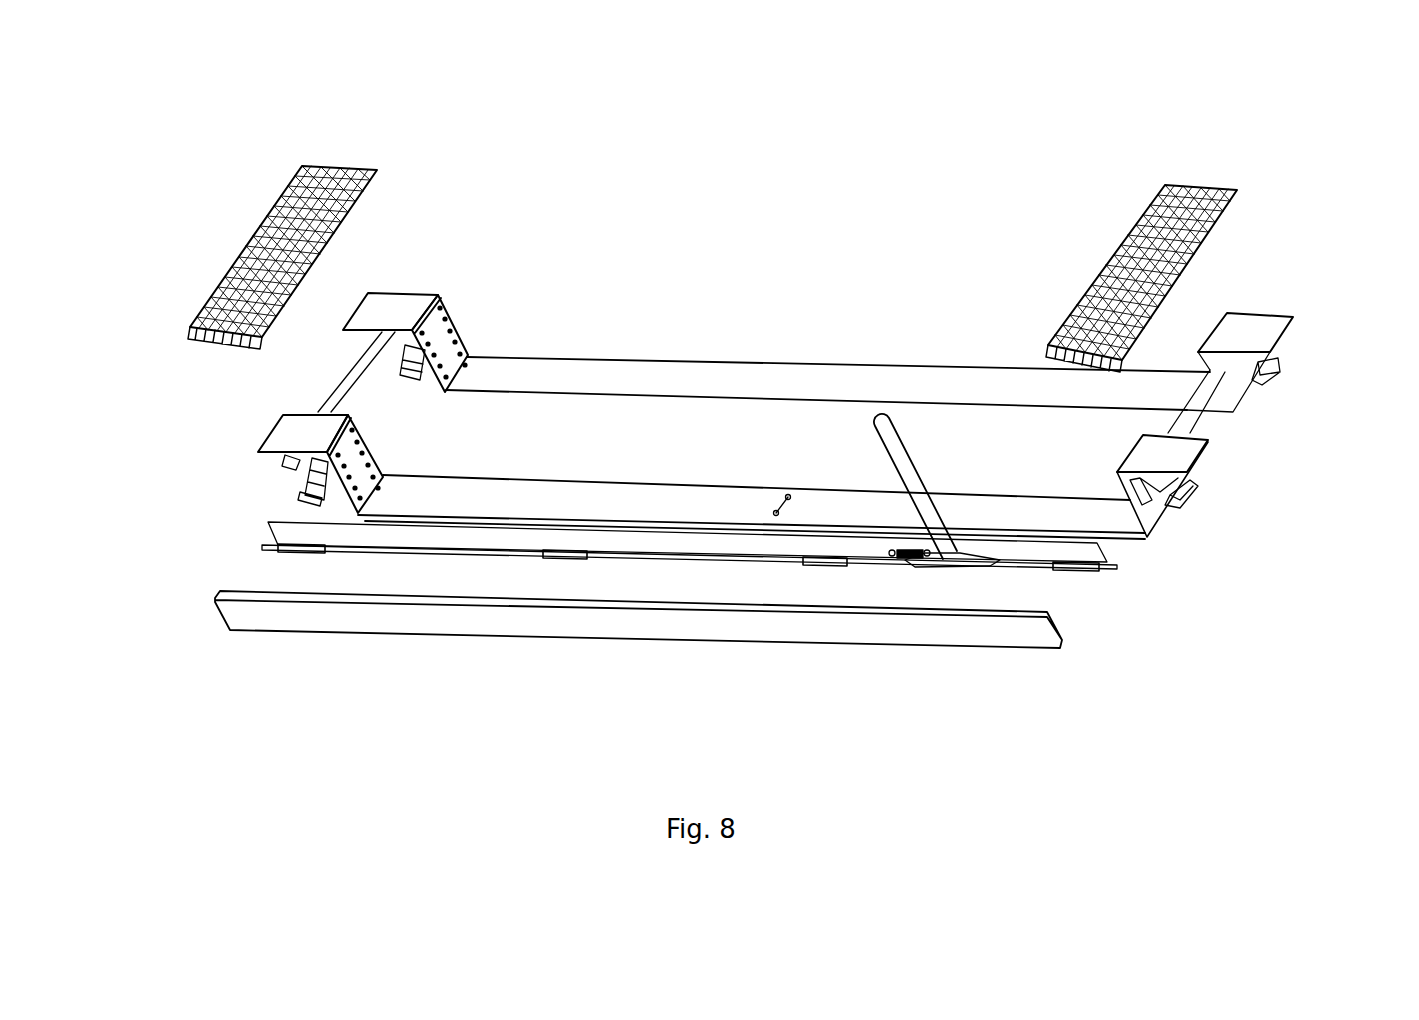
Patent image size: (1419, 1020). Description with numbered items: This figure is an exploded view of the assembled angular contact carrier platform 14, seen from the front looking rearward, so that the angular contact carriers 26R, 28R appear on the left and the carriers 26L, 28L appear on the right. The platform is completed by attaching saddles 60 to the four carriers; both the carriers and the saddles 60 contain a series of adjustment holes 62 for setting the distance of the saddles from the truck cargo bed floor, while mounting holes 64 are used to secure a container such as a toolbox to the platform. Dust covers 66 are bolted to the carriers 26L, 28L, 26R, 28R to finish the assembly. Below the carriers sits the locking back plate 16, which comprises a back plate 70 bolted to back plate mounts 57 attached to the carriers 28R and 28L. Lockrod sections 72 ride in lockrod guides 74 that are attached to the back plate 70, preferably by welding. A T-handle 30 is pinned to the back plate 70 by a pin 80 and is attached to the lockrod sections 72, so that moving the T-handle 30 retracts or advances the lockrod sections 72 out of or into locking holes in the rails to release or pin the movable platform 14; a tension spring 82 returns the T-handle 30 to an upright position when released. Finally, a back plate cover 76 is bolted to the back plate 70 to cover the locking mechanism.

The angular contact carrier platform 14 is at (782, 214).
The locking back plate 16 is at (235, 573).
The angular contact carrier 26R is at (478, 255).
The angular contact carrier 26L is at (1290, 283).
The angular contact carrier 28R is at (235, 433).
The angular contact carrier 28L is at (1227, 487).
The T-handle 30 is at (903, 458).
The back plate mounts 57 is at (318, 470).
The saddles 60 is at (752, 357).
The adjustment holes 62 is at (788, 495).
The mounting holes 64 is at (460, 346).
The dust covers 66 is at (350, 165).
The back plate 70 is at (432, 537).
The lockrod sections 72 is at (617, 558).
The lockrod guides 74 is at (305, 553).
The back plate cover 76 is at (767, 640).
The pin 80 is at (953, 566).
The tension spring 82 is at (907, 548).